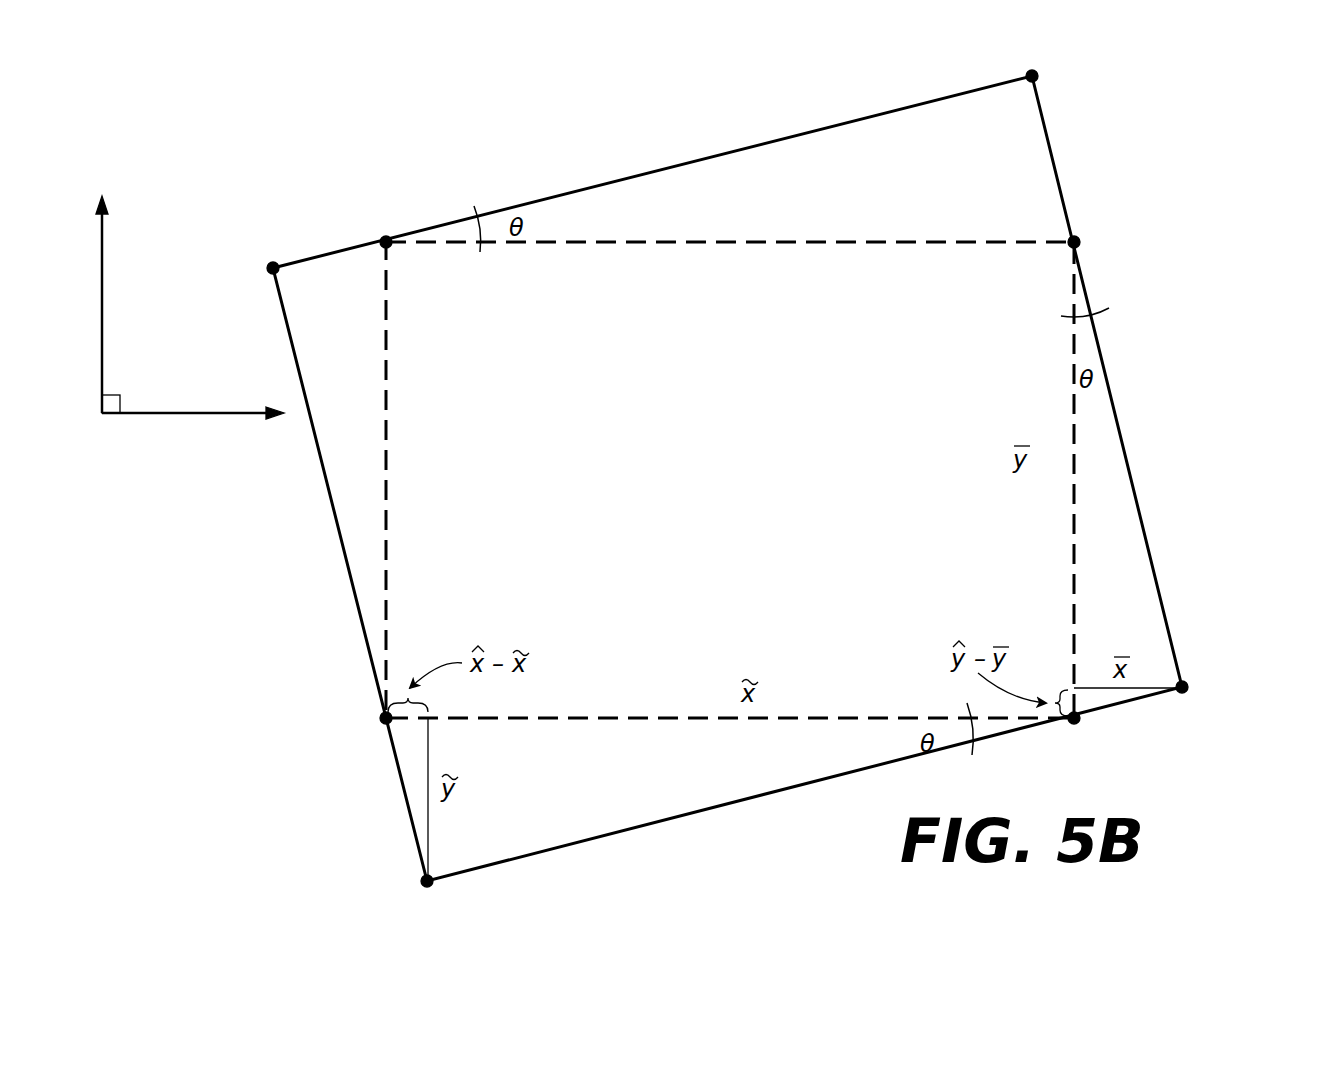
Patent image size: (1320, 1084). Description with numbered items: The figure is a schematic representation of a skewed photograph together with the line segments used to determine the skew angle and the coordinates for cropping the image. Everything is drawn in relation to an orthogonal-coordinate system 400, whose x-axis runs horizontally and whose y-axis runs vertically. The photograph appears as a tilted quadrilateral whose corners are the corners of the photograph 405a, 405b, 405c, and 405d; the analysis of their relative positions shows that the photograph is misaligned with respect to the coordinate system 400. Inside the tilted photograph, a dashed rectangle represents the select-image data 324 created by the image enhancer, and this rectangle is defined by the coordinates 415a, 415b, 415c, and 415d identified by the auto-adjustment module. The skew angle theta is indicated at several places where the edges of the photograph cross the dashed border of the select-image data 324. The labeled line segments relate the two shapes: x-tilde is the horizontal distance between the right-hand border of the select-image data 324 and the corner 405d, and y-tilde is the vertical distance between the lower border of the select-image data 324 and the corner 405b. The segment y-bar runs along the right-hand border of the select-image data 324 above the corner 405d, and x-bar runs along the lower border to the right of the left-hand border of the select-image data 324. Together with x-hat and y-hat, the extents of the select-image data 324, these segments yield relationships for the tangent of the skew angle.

The orthogonal-coordinate system 400 is at (186, 421).
The select-image data 324 is at (774, 238).
The corner of the photograph 405a is at (275, 262).
The corner of the photograph 405b is at (426, 887).
The corner of the photograph 405c is at (1036, 75).
The corner of the photograph 405d is at (1183, 681).
The coordinate of the select-image data 415a is at (388, 236).
The coordinate of the select-image data 415b is at (384, 724).
The coordinate of the select-image data 415c is at (1076, 236).
The coordinate of the select-image data 415d is at (1077, 723).